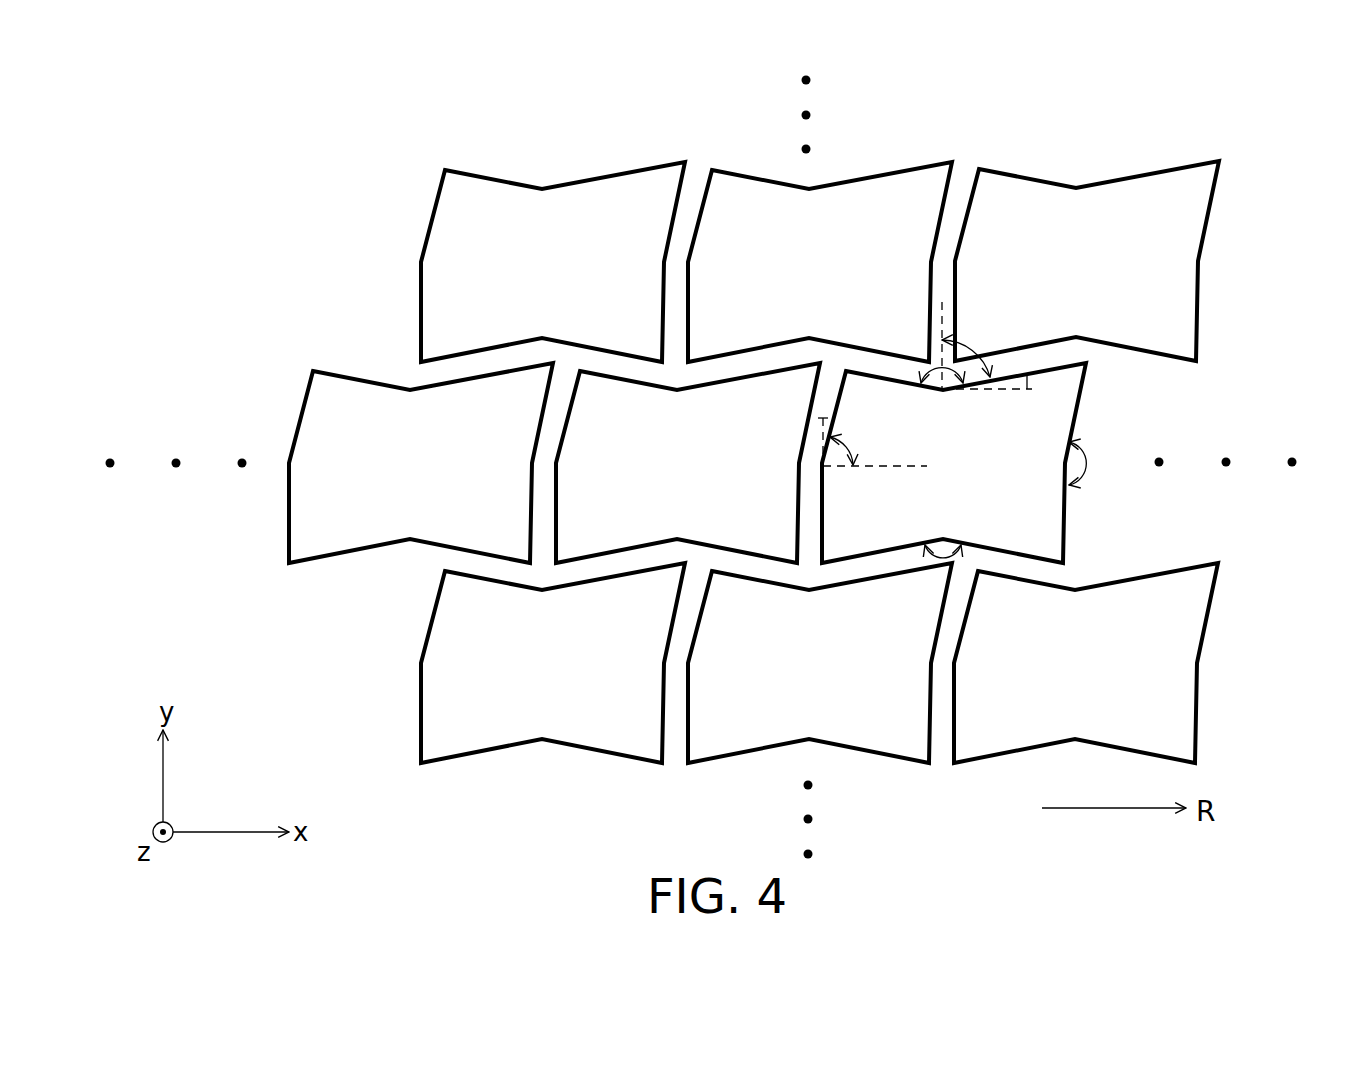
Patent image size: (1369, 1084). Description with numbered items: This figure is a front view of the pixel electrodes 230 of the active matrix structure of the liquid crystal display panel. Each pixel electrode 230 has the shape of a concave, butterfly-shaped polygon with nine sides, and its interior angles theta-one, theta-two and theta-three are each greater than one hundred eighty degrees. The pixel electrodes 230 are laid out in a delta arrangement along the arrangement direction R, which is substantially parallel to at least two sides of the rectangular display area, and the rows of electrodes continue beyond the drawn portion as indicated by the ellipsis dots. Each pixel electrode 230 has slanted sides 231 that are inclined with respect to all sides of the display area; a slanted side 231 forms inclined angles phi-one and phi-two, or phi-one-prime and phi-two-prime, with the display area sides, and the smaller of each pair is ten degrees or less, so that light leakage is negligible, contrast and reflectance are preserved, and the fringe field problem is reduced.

The pixel electrode 230 is at (1172, 283).
The slanted side 231 is at (565, 417).